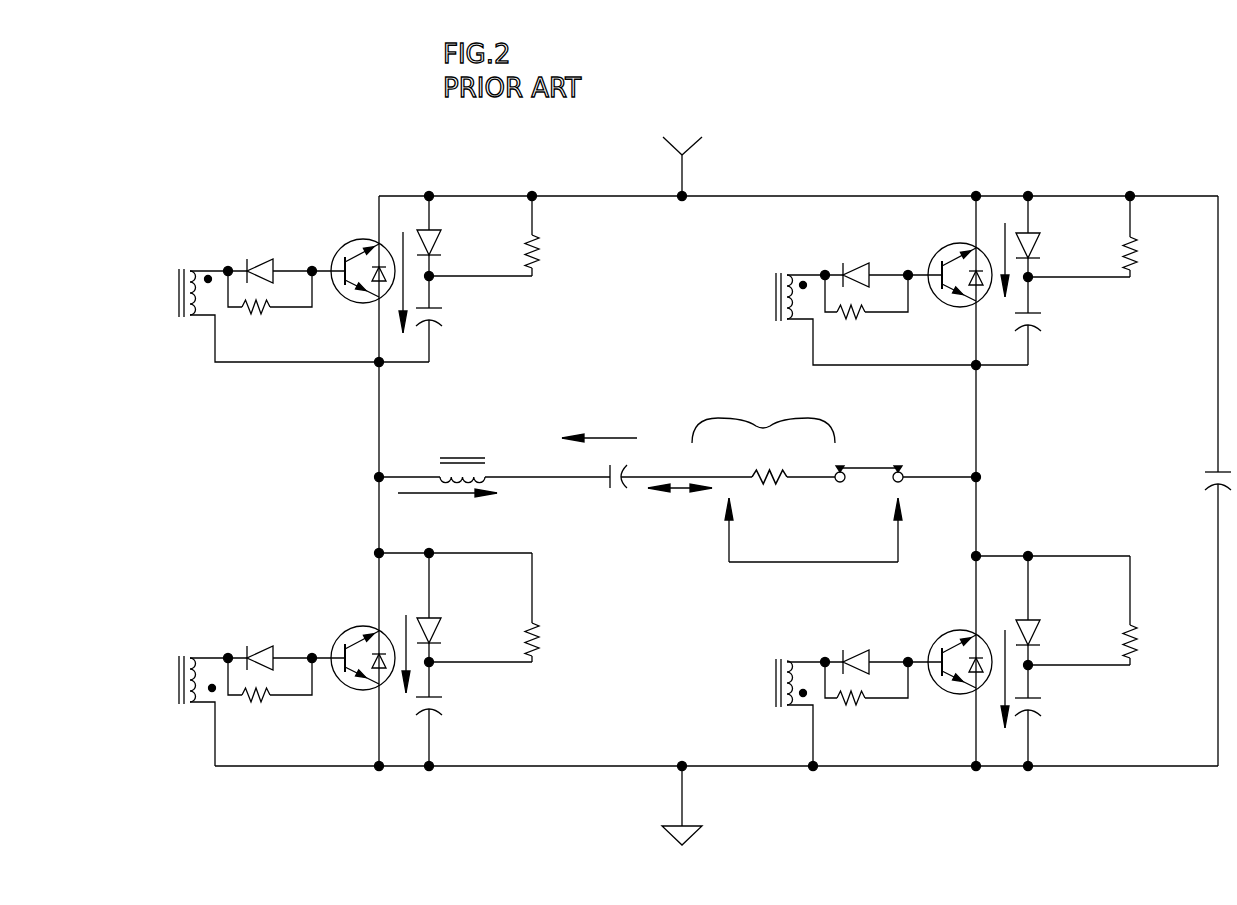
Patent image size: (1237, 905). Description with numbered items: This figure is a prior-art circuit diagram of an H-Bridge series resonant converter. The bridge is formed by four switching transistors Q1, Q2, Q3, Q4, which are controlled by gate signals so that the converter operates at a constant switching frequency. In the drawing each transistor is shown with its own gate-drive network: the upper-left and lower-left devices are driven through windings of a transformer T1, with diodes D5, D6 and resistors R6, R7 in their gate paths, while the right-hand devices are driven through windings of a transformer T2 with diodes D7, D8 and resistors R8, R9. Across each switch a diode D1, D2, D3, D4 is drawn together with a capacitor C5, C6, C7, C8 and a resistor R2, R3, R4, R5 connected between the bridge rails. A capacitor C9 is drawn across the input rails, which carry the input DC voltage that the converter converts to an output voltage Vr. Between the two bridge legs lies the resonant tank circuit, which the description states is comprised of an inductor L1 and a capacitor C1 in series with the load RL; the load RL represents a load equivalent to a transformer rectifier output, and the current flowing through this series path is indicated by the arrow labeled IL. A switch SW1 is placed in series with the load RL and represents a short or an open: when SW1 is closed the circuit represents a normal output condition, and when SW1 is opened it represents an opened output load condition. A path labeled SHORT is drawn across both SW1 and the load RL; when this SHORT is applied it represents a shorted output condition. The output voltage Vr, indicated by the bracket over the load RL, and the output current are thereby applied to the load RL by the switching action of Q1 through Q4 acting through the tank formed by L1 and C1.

The gate drive transformer T1 is at (196, 471).
The gate drive transformer T2 is at (790, 474).
The snubber diode D1 is at (455, 230).
The snubber diode D2 is at (455, 620).
The snubber diode D3 is at (1055, 233).
The snubber diode D4 is at (1055, 621).
The gate diode D5 is at (260, 244).
The gate diode D6 is at (256, 618).
The gate diode D7 is at (855, 247).
The gate diode D8 is at (855, 639).
The switching transistor Q1 is at (362, 254).
The switching transistor Q2 is at (361, 639).
The switching transistor Q3 is at (957, 257).
The switching transistor Q4 is at (948, 640).
The snubber resistor R2 is at (554, 237).
The snubber resistor R3 is at (551, 627).
The snubber resistor R4 is at (1152, 239).
The snubber resistor R5 is at (1153, 628).
The gate resistor R6 is at (270, 313).
The gate resistor R7 is at (270, 698).
The gate resistor R8 is at (866, 316).
The gate resistor R9 is at (866, 702).
The resonant capacitor C1 is at (622, 494).
The snubber capacitor C5 is at (452, 304).
The snubber capacitor C6 is at (451, 690).
The snubber capacitor C7 is at (1050, 307).
The snubber capacitor C8 is at (1051, 692).
The bulk capacitor C9 is at (1190, 468).
The resonant inductor L1 is at (462, 443).
The load RL is at (773, 459).
The switch SW1 is at (876, 455).
The output voltage Vr is at (763, 416).
The load current IL is at (680, 470).
The short SHORT is at (813, 530).